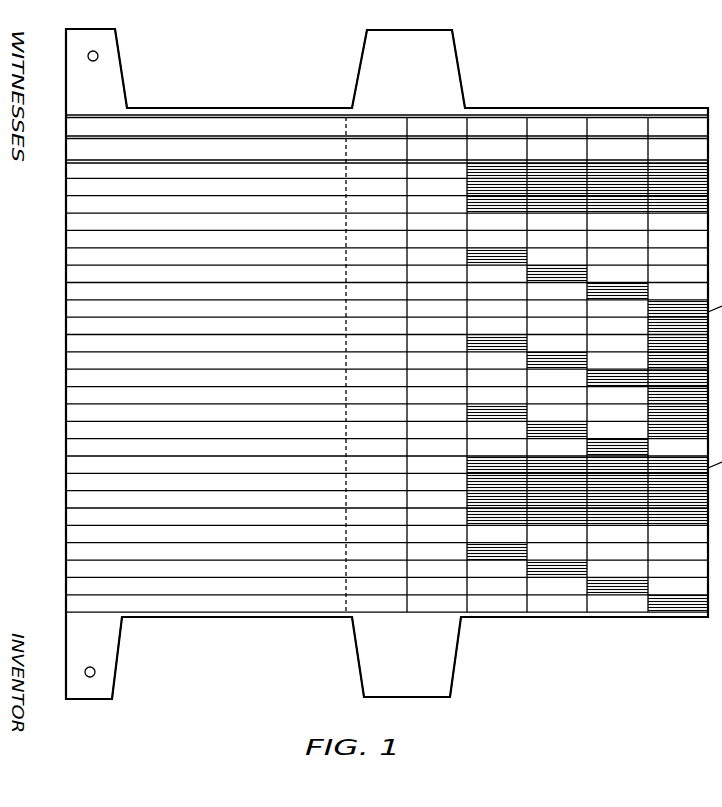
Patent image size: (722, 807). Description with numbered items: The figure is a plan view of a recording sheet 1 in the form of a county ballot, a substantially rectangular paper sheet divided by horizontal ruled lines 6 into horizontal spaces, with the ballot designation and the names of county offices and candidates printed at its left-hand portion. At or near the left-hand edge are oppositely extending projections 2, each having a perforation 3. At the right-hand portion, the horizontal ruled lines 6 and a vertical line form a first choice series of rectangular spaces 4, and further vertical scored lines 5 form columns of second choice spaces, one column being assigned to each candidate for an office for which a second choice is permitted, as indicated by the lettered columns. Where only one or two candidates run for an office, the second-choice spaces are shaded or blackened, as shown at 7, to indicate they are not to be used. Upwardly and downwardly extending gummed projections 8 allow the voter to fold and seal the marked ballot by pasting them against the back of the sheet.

The recording sheet 1 is at (66, 372).
The oppositely extending projections 2 is at (137, 642).
The perforation 3 is at (133, 669).
The series of rectangular spaces 4 is at (414, 364).
The vertical scored lines 5 is at (558, 636).
The horizontal ruled lines 6 is at (625, 636).
The obliterated second-choice spaces 7 is at (697, 612).
The upwardly and downwardly extending projections 8 is at (486, 652).